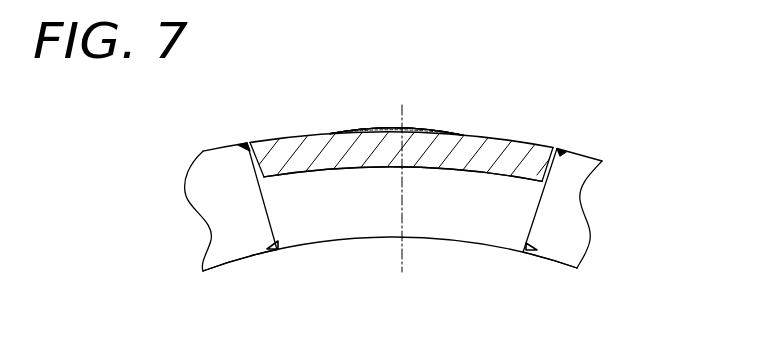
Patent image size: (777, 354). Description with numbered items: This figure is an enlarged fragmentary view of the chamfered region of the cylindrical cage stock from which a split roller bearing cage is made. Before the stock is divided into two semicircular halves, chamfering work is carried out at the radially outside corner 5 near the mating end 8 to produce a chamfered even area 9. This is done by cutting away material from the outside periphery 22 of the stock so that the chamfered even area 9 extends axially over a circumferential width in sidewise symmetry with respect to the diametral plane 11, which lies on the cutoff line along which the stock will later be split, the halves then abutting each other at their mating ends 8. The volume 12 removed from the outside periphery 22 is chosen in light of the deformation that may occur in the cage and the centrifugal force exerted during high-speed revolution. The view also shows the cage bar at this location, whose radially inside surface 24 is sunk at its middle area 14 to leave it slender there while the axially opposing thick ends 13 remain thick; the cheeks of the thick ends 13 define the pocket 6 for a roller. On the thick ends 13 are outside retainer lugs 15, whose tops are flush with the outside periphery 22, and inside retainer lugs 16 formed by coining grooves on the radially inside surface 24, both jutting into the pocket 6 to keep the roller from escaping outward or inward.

The radially outside corner 5 is at (370, 130).
The pocket 6 is at (255, 170).
The mating end 8 is at (404, 143).
The chamfered even area 9 is at (420, 130).
The diametral plane 11 is at (403, 153).
The volume removed 12 is at (392, 129).
The thick ends 13 is at (345, 213).
The middle area 14 is at (483, 153).
The outside retainer lugs 15 is at (250, 145).
The inside retainer lugs 16 is at (277, 252).
The outside periphery 22 is at (535, 141).
The radially inside surface 24 is at (237, 266).